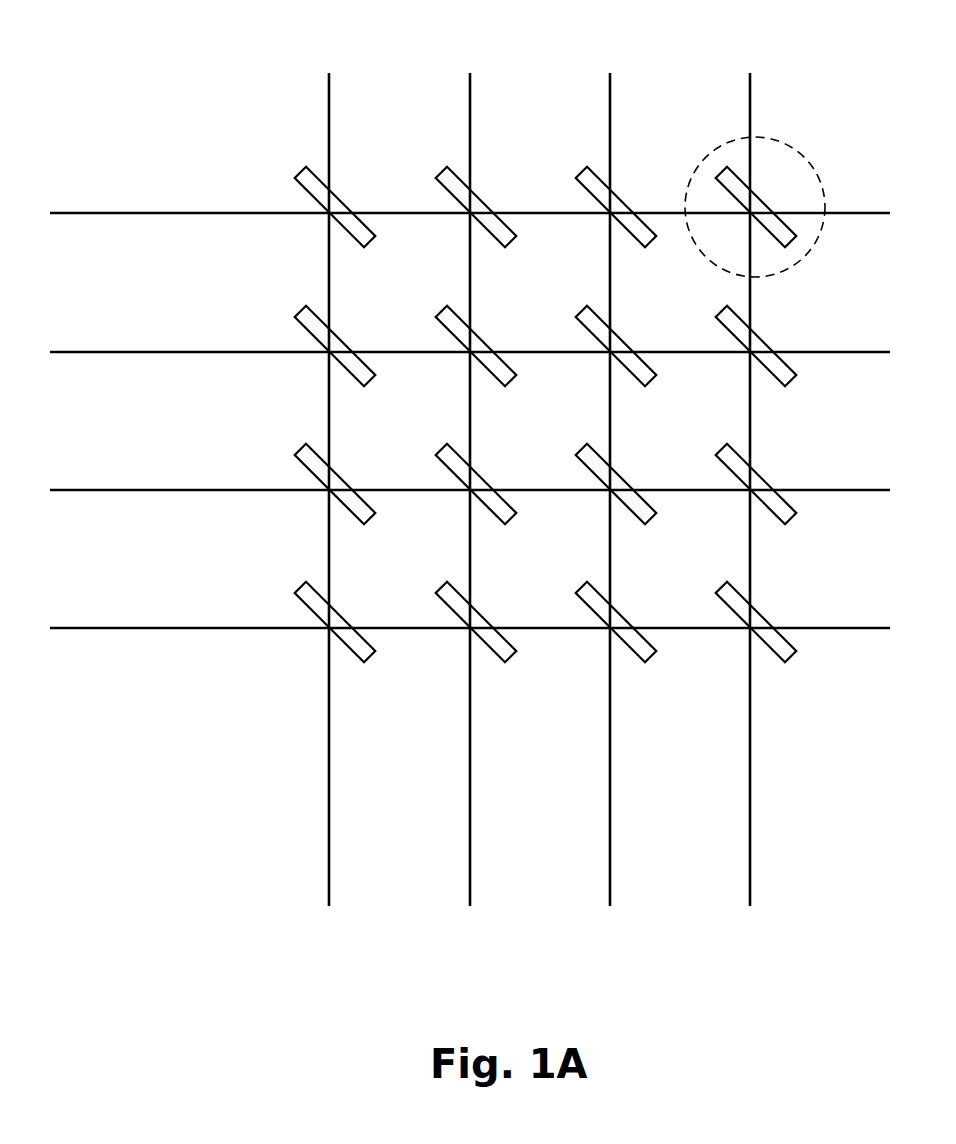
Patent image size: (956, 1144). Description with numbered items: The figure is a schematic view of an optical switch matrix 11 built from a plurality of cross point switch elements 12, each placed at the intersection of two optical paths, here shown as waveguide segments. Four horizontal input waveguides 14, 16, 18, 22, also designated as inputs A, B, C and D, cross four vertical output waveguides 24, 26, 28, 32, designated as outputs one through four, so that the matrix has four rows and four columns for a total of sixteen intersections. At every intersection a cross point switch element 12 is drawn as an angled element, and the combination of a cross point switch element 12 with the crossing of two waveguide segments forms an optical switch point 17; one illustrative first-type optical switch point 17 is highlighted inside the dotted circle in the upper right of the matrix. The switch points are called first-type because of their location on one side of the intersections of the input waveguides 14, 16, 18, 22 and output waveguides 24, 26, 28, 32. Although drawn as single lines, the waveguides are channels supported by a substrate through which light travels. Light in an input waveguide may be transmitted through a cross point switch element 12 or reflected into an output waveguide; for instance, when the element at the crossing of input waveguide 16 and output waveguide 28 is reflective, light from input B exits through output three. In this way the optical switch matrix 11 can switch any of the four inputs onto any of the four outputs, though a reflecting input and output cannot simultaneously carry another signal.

The optical switch matrix 11 is at (270, 31).
The cross point switch element 12 is at (301, 170).
The input waveguide 14 is at (155, 215).
The input waveguide 16 is at (155, 354).
The optical switch point 17 is at (776, 134).
The input waveguide 18 is at (155, 492).
The input waveguide 22 is at (155, 630).
The output waveguide 24 is at (330, 776).
The output waveguide 26 is at (471, 793).
The output waveguide 28 is at (611, 792).
The output waveguide 32 is at (751, 782).